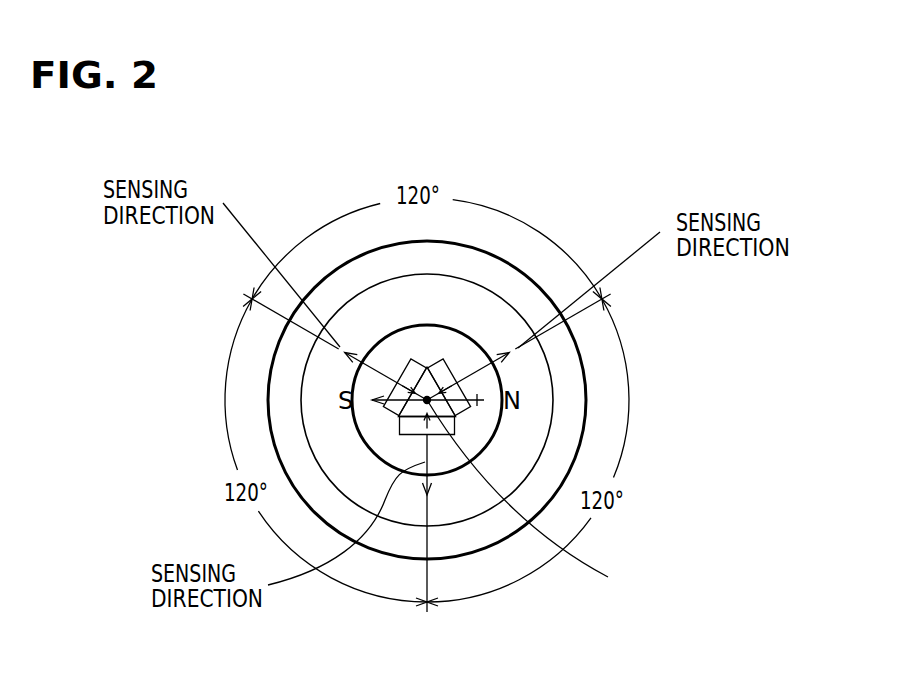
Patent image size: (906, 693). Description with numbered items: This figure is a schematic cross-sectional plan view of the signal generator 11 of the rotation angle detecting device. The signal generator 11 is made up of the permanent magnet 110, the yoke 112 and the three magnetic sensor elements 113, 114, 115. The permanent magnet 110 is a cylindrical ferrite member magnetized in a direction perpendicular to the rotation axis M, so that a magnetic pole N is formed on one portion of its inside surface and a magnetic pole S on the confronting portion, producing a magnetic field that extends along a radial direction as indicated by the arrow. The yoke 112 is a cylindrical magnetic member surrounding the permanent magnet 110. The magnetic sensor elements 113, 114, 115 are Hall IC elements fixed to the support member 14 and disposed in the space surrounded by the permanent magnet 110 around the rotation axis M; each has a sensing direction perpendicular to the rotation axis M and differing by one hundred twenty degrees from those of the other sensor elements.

The signal generator 11 is at (572, 260).
The permanent magnet 110 is at (540, 380).
The yoke 112 is at (570, 430).
The support member 14 is at (428, 365).
The magnetic sensor element 113 is at (453, 434).
The magnetic sensor element 114 is at (444, 360).
The magnetic sensor element 115 is at (410, 358).
The rotation axis M is at (400, 432).